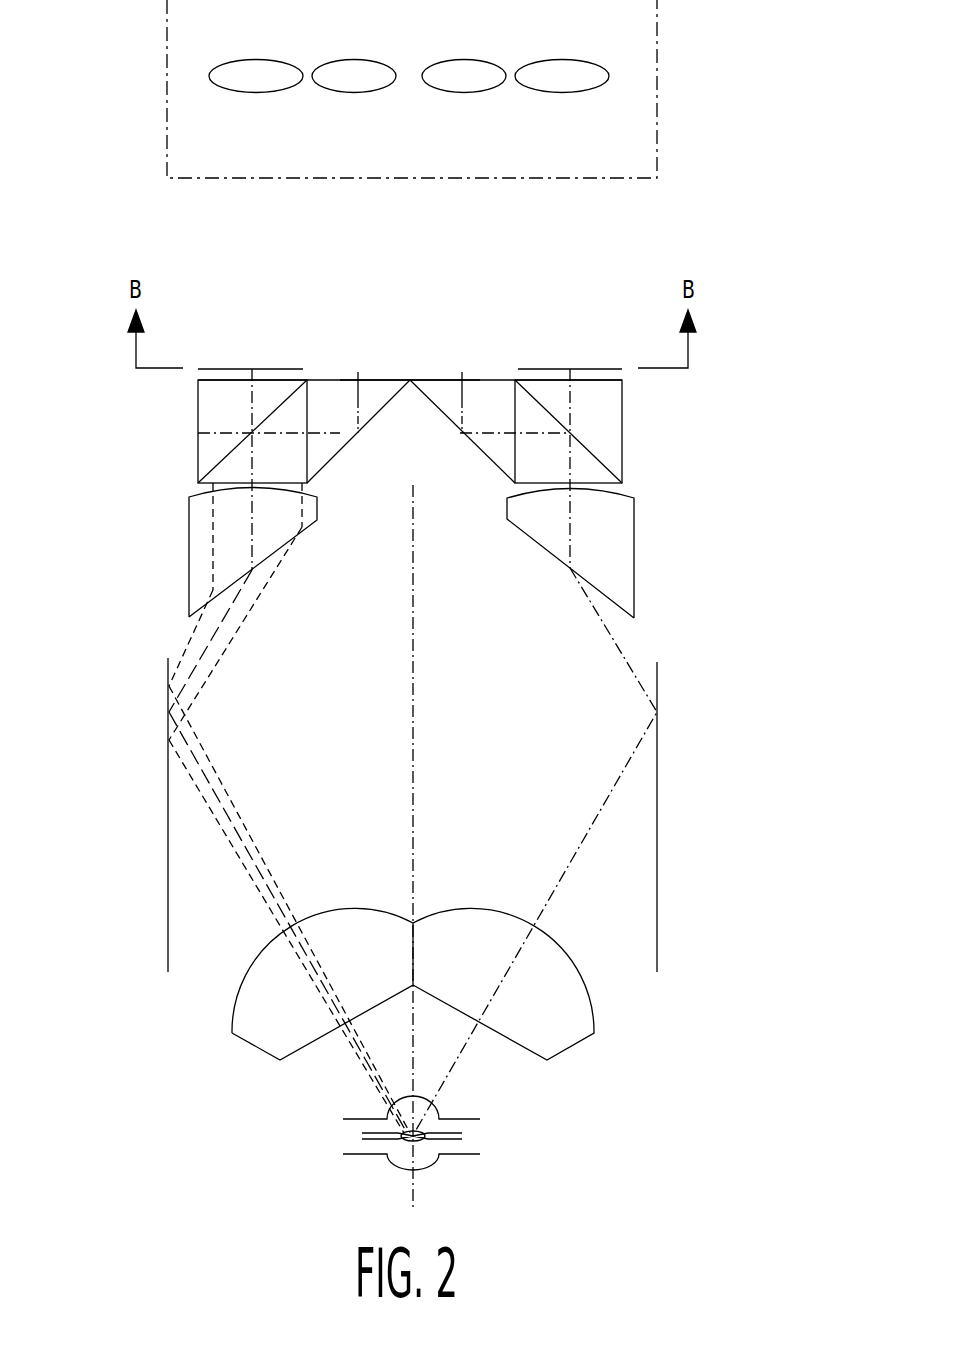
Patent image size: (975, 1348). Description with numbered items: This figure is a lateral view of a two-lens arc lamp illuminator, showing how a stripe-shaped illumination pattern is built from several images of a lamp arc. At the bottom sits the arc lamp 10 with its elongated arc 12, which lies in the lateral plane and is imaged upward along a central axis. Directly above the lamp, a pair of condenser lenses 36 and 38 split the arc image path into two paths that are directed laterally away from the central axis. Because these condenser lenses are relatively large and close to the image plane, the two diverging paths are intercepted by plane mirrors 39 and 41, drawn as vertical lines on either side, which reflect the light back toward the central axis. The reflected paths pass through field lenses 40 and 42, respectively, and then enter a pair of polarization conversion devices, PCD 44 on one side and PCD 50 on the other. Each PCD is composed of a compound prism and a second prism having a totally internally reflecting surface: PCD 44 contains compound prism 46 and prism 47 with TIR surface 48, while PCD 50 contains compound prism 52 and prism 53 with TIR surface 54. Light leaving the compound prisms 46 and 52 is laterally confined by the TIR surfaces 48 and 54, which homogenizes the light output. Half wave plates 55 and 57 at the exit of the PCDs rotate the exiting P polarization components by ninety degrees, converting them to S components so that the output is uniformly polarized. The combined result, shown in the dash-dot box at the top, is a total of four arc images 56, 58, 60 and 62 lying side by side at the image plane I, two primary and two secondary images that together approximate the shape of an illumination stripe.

The arc lamp 10 is at (485, 1147).
The elongated arc 12 is at (472, 1137).
The condenser lens 36 is at (570, 1050).
The condenser lens 38 is at (245, 1040).
The plane mirror 39 is at (657, 773).
The field lens 40 is at (635, 545).
The plane mirror 41 is at (168, 910).
The field lens 42 is at (189, 545).
The PCD 44 is at (640, 420).
The compound prism 46 is at (622, 457).
The prism 47 is at (437, 380).
The TIR surface 48 is at (480, 450).
The PCD 50 is at (174, 420).
The compound prism 52 is at (198, 483).
The prism 53 is at (378, 380).
The TIR surface 54 is at (340, 450).
The half wave plate 55 is at (585, 369).
The arc image 56 is at (578, 92).
The half wave plate 57 is at (232, 369).
The arc image 58 is at (478, 92).
The arc image 60 is at (370, 92).
The arc image 62 is at (272, 92).
The image plane I is at (593, 178).